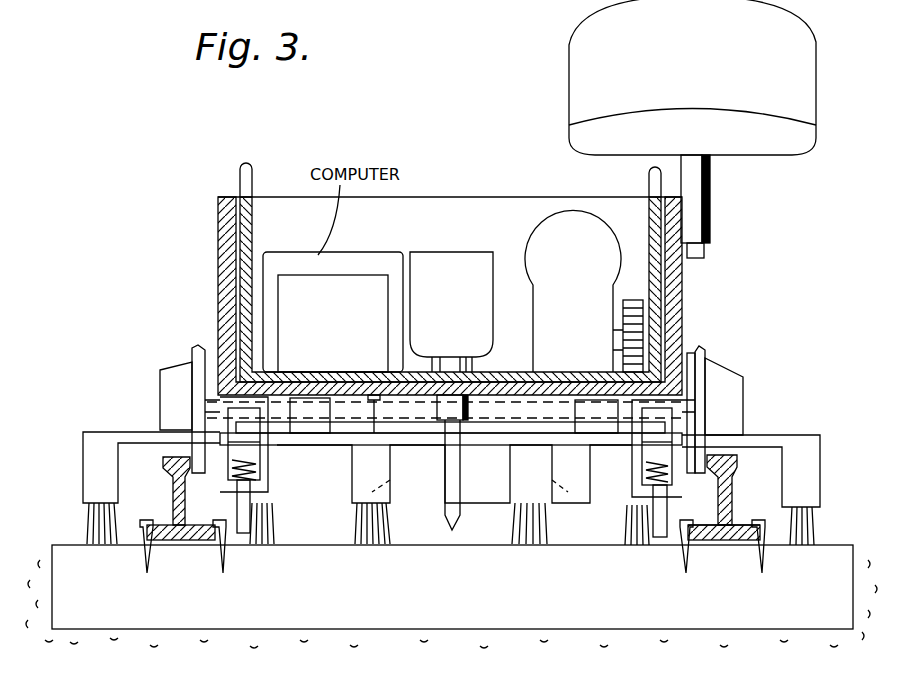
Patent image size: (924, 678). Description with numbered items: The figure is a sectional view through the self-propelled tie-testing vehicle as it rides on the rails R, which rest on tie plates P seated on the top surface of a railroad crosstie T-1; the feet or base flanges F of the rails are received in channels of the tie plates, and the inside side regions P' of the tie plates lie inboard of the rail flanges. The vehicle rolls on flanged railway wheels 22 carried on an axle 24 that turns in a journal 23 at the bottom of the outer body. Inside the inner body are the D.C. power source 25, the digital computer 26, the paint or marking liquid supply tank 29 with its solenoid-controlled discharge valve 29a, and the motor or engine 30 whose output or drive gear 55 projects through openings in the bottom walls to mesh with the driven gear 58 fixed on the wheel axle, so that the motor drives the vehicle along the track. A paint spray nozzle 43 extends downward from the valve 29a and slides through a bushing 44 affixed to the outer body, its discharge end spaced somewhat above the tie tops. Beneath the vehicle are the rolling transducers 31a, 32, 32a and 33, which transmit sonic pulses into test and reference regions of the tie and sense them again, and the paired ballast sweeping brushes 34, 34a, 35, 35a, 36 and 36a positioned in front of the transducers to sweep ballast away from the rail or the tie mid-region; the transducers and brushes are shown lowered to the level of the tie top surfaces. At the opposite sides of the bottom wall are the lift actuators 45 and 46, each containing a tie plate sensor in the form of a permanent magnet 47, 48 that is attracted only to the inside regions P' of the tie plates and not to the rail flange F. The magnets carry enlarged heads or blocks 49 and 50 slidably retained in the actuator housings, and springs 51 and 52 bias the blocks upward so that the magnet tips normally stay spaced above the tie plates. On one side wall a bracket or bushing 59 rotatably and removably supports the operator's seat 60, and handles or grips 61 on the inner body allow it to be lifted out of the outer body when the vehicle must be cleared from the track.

The flanged railway wheel 22 is at (173, 373).
The journal 23 is at (305, 420).
The front axle 24 is at (508, 395).
The D.C. power source 25 is at (340, 285).
The digital computer 26 is at (297, 262).
The paint or marking liquid supply tank 29 is at (429, 262).
The solenoid-controlled discharge valve 29a is at (443, 368).
The electric motor or engine 30 is at (544, 243).
The rolling transducer 31a is at (820, 498).
The rolling transducer 32 is at (394, 500).
The rolling transducer 32a is at (620, 490).
The rolling transducer 33 is at (80, 492).
The ballast sweeping brush 34 is at (625, 547).
The ballast sweeping brush 34a is at (800, 547).
The ballast sweeping brush 35 is at (362, 547).
The ballast sweeping brush 35a is at (530, 547).
The ballast sweeping brush 36 is at (90, 525).
The ballast sweeping brush 36a is at (275, 525).
The paint spray nozzle 43 is at (445, 515).
The bushing 44 is at (455, 415).
The lift actuator 45 is at (682, 425).
The lift actuator 46 is at (215, 425).
The tie plate sensor 47 is at (668, 510).
The tie plate sensor 48 is at (237, 512).
The enlarged head or block 49 is at (668, 445).
The enlarged head or block 50 is at (240, 440).
The spring 51 is at (640, 490).
The spring 52 is at (246, 470).
The drive gear 55 is at (645, 303).
The driven gear 58 is at (700, 345).
The bracket or bushing 59 is at (708, 220).
The operator's seat 60 is at (770, 148).
The handle or grip 61 is at (252, 177).
The rail R is at (173, 520).
The tie plate P is at (464, 557).
The inside side region of tie plate P' is at (453, 554).
The base flange F is at (728, 547).
The railroad crosstie T-1 is at (330, 629).